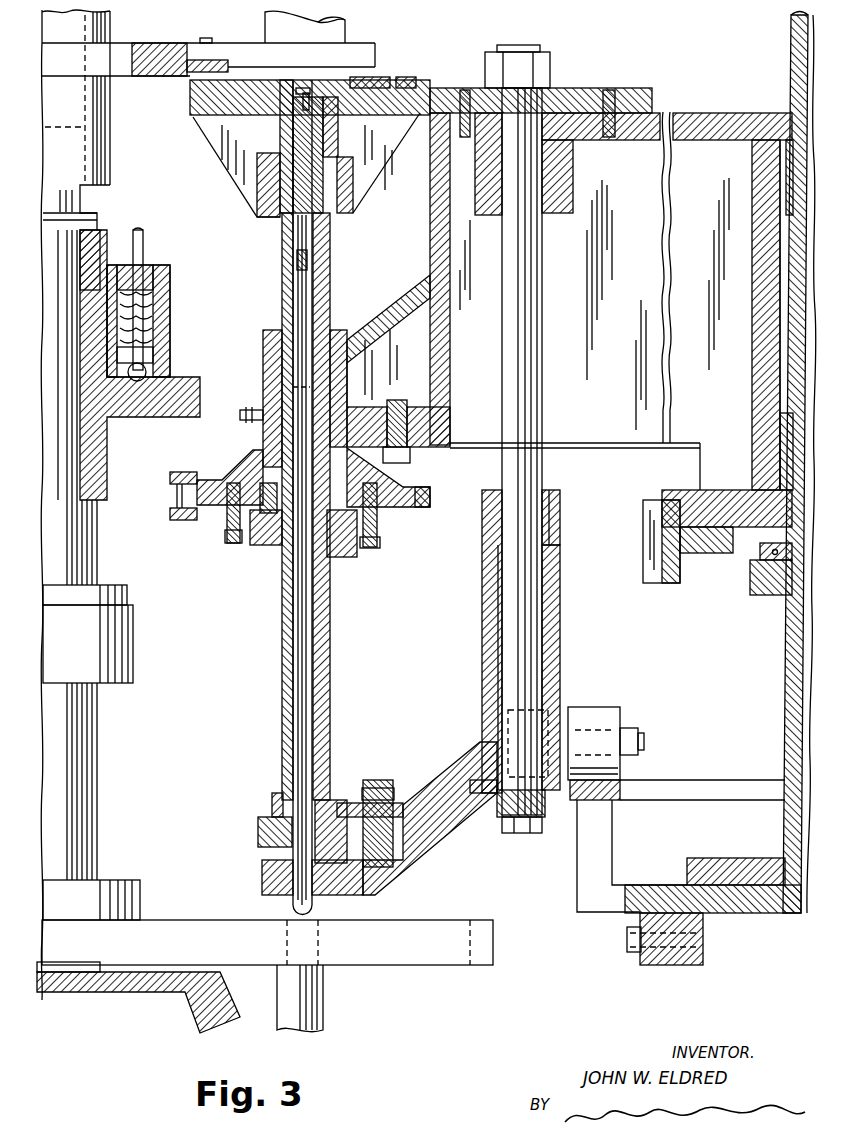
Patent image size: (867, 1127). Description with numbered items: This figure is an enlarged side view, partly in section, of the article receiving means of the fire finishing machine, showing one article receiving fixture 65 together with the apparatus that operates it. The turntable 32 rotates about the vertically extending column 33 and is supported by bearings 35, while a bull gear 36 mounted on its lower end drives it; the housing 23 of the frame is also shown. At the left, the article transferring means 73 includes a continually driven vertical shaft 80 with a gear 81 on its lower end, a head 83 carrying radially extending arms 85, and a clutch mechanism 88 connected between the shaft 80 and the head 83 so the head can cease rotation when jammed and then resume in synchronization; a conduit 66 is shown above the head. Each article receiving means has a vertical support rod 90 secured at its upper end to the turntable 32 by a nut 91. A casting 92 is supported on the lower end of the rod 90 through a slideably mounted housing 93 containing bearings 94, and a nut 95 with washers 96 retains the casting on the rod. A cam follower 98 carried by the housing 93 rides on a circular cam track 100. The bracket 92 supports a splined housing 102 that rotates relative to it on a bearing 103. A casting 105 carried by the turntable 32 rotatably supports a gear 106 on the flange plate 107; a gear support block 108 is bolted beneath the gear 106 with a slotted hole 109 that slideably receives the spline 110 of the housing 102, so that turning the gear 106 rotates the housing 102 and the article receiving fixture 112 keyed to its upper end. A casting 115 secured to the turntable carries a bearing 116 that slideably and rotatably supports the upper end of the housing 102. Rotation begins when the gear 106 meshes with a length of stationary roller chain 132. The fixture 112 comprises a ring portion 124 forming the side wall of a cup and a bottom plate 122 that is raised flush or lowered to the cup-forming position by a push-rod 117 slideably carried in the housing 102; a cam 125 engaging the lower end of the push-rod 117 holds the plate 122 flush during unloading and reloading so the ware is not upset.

The housing 23 is at (297, 80).
The turntable 32 is at (722, 112).
The column 33 is at (786, 675).
The bearings 35 is at (750, 568).
The bull gear 36 is at (652, 572).
The article receiving fixture 65 is at (428, 88).
The conduit 66 is at (263, 28).
The article transferring means 73 is at (112, 184).
The vertical shaft 80 is at (78, 545).
The gear 81 is at (120, 993).
The head 83 is at (113, 26).
The radially extending arms 85 is at (370, 53).
The clutch mechanism 88 is at (172, 297).
The vertical support rod 90 is at (542, 257).
The nut 91 is at (550, 62).
The casting 92 is at (428, 845).
The slideably mounted housing 93 is at (557, 575).
The bearings 94 is at (544, 513).
The nut 95 is at (510, 833).
The washers 96 is at (497, 797).
The cam follower 98 is at (595, 712).
The circular cam track 100 is at (605, 813).
The splined housing 102 is at (330, 618).
The bearing 103 is at (258, 830).
The casting 105 is at (394, 325).
The gear 106 is at (412, 500).
The flange plate 107 is at (378, 548).
The gear support block 108 is at (382, 530).
The hole 109 is at (347, 558).
The spline 110 is at (282, 612).
The article receiving fixture 112 is at (338, 125).
The casting 115 is at (353, 178).
The bearing 116 is at (353, 204).
The push-rod 117 is at (312, 298).
The bottom plate 122 is at (280, 77).
The ring portion 124 is at (372, 78).
The cam 125 is at (410, 968).
The stationary roller chain 132 is at (175, 520).